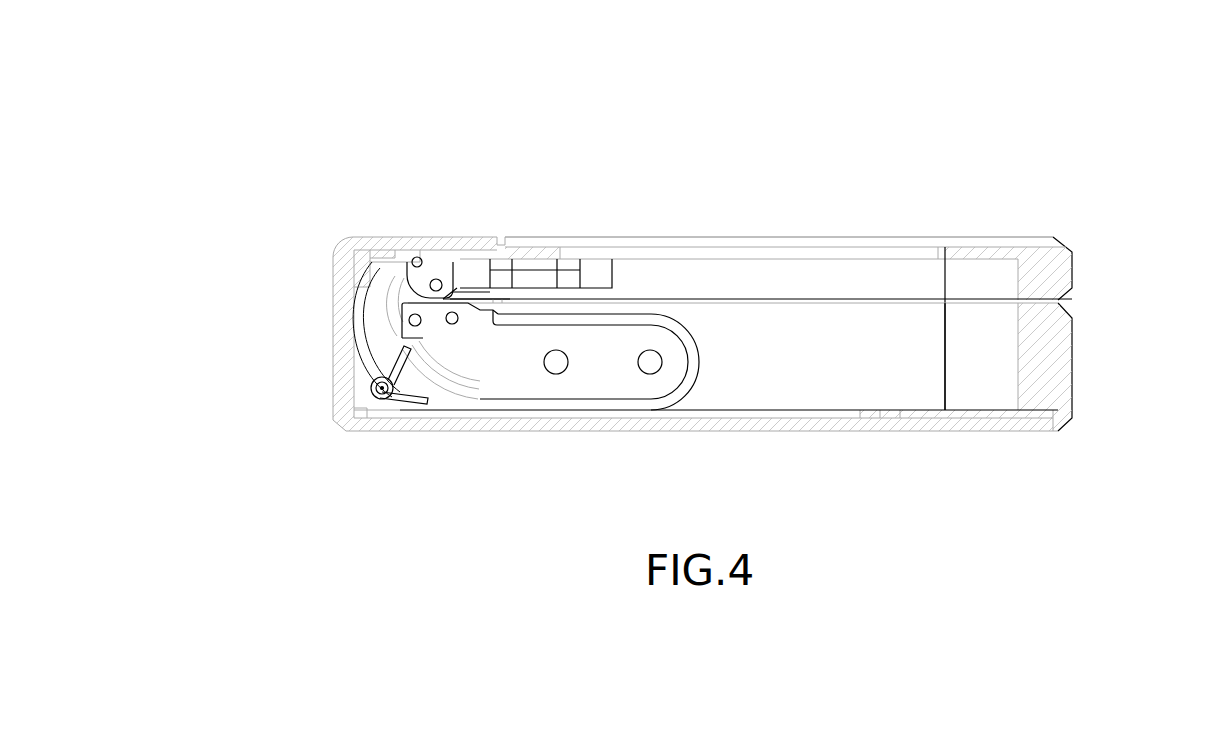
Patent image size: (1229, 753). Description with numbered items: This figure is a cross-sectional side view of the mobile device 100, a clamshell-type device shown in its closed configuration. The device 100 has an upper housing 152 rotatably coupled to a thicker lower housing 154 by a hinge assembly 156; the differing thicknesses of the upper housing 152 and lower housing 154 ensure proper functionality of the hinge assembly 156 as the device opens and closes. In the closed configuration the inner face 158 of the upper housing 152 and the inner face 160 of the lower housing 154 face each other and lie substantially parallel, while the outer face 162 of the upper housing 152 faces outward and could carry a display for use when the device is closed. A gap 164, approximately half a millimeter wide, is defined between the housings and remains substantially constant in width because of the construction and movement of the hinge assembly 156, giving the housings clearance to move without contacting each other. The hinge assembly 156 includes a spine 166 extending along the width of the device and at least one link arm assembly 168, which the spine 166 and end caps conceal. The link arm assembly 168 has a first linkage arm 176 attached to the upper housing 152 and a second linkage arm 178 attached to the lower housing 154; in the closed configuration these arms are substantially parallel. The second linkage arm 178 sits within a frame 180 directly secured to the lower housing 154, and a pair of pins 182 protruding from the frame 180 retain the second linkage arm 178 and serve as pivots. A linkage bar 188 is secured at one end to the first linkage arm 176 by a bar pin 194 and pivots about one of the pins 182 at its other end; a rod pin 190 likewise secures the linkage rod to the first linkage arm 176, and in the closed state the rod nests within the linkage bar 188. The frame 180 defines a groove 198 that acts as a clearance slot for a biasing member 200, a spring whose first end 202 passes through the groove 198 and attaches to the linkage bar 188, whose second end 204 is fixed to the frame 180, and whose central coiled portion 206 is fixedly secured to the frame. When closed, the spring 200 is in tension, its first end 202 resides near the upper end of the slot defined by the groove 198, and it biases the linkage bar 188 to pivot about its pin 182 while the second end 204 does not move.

The mobile device 100 is at (249, 167).
The upper housing 152 is at (1083, 260).
The lower housing 154 is at (1087, 394).
The hinge assembly 156 is at (317, 341).
The inner face of upper housing 158 is at (1000, 297).
The inner face of lower housing 160 is at (892, 302).
The outer face of upper housing 162 is at (799, 235).
The gap 164 is at (1062, 297).
The spine 166 is at (337, 280).
The link arm assembly 168 is at (511, 410).
The first linkage arm 176 is at (466, 275).
The second linkage arm 178 is at (557, 383).
The frame 180 is at (650, 403).
The pins 182 is at (452, 325).
The linkage bar 188 is at (395, 278).
The rod pin 190 is at (436, 279).
The bar pin 194 is at (416, 257).
The groove 198 is at (445, 374).
The biasing member 200 is at (333, 391).
The first end of spring 202 is at (407, 346).
The second end of spring 204 is at (427, 404).
The coiled portion 206 is at (367, 393).